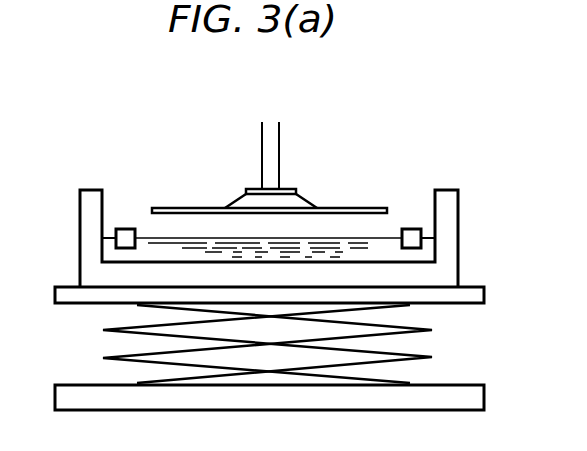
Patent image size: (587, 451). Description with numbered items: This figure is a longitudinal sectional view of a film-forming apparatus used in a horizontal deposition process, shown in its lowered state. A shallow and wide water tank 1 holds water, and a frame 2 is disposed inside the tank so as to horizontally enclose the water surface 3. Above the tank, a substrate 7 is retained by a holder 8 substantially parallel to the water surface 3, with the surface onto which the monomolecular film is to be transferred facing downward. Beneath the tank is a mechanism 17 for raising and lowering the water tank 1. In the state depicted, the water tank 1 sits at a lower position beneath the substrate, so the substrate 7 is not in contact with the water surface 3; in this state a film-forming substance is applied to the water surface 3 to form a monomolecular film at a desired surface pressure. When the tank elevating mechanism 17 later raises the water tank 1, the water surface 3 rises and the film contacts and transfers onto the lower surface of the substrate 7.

The water tank 1 is at (87, 240).
The frame 2 is at (126, 228).
The water surface 3 is at (387, 238).
The substrate 7 is at (172, 208).
The holder 8 is at (262, 138).
The tank elevating mechanism 17 is at (432, 330).